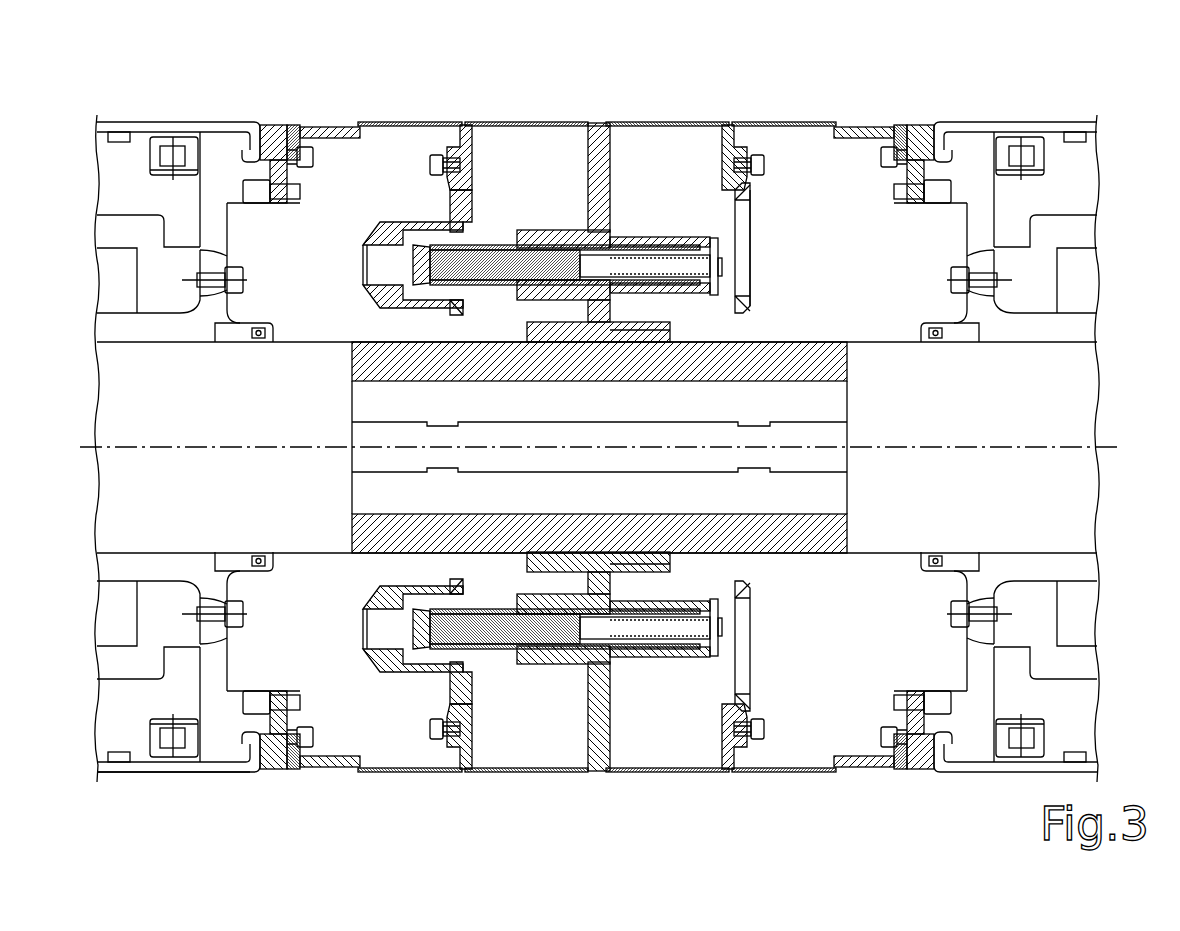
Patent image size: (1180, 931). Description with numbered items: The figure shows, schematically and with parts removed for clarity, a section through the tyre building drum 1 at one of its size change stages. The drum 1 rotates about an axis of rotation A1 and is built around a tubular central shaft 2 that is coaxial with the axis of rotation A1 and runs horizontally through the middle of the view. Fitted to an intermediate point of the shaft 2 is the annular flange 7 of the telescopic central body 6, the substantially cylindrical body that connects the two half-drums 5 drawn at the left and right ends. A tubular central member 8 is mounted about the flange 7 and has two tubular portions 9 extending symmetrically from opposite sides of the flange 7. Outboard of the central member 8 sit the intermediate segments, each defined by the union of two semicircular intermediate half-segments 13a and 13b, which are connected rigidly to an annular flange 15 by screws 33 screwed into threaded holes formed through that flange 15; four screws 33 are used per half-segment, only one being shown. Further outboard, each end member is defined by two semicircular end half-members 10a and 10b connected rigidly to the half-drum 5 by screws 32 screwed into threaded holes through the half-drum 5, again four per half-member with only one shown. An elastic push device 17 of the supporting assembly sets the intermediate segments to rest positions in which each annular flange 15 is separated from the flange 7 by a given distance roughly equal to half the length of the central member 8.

The tyre building drum 1 is at (166, 781).
The tubular central shaft 2 is at (1078, 363).
The half-drum 5 is at (190, 118).
The telescopic central body 6 is at (609, 91).
The annular flange 7 is at (608, 192).
The tubular central member 8 is at (578, 108).
The tubular portion 9 is at (527, 121).
The semicircular end half-member 10a is at (334, 127).
The semicircular end half-member 10b is at (322, 767).
The semicircular intermediate half-segment 13a is at (418, 124).
The semicircular intermediate half-segment 13b is at (416, 774).
The annular flange 15 is at (452, 207).
The elastic push device 17 is at (758, 283).
The screw 32 is at (302, 132).
The screw 33 is at (428, 163).
The axis of rotation A1 is at (1062, 447).